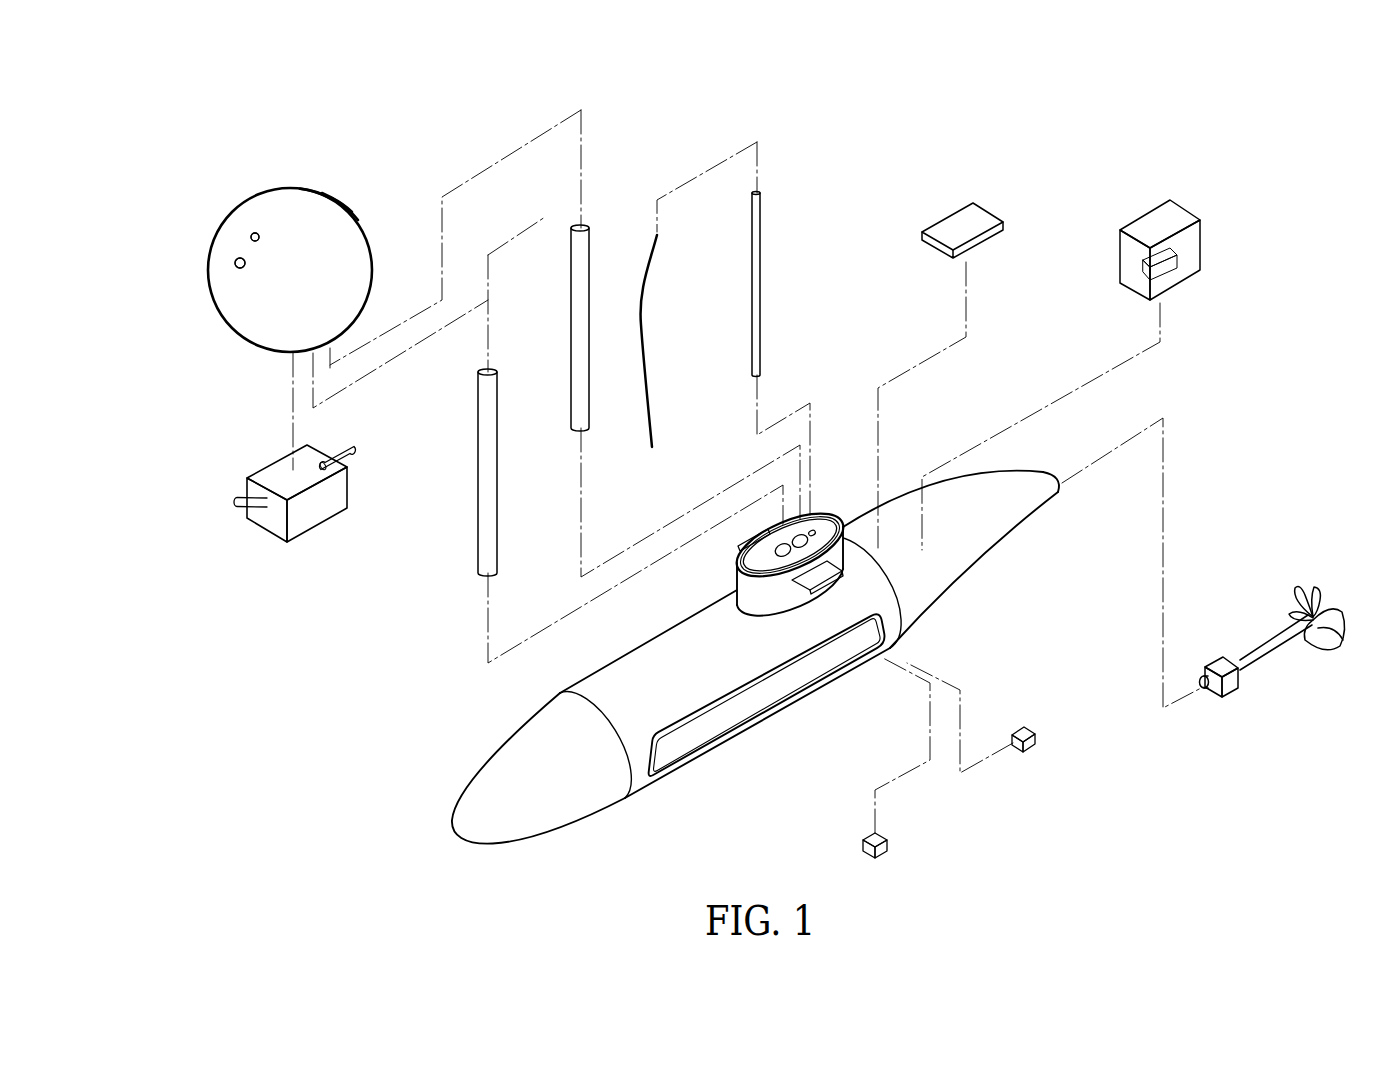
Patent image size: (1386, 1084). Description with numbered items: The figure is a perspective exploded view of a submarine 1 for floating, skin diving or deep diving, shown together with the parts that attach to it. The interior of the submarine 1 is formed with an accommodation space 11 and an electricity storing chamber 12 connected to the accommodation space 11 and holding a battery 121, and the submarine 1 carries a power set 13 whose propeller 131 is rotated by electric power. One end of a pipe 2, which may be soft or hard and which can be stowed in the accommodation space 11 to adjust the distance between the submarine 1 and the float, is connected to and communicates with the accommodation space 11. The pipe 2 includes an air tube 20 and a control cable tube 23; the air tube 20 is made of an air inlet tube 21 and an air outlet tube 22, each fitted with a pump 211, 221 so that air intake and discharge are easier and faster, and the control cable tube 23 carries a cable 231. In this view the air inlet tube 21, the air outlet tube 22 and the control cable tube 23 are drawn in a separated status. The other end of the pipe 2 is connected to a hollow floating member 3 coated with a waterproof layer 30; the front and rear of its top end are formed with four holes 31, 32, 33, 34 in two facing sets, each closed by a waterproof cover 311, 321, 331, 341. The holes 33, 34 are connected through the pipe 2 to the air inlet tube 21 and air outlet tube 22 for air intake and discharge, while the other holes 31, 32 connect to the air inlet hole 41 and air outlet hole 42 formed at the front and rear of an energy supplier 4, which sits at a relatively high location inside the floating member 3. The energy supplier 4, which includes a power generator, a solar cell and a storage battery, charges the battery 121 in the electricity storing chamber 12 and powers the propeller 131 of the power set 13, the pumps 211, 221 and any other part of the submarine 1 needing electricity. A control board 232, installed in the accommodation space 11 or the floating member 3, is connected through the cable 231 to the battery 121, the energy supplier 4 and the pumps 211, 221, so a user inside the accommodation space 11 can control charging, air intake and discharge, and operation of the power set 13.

The submarine 1 is at (639, 672).
The accommodation space 11 is at (974, 559).
The electricity storing chamber 12 is at (1102, 375).
The battery 121 is at (1108, 265).
The power set 13 is at (1203, 626).
The propeller 131 is at (1276, 605).
The pipe 2 is at (707, 364).
The air tube 20 is at (447, 259).
The air inlet tube 21 is at (507, 448).
The pump 211 is at (922, 758).
The air outlet tube 22 is at (548, 328).
The pump 221 is at (1017, 718).
The control cable tube 23 is at (792, 284).
The cable 231 is at (688, 341).
The control board 232 is at (971, 360).
The floating member 3 is at (211, 445).
The waterproof layer 30 is at (278, 298).
The hole 31 is at (229, 204).
The waterproof cover 311 is at (207, 219).
The hole 32 is at (323, 166).
The waterproof cover 321 is at (372, 177).
The hole 33 is at (202, 260).
The waterproof cover 331 is at (200, 297).
The hole 34 is at (373, 208).
The waterproof cover 341 is at (385, 234).
The energy supplier 4 is at (319, 497).
The air inlet hole 41 is at (231, 532).
The air outlet hole 42 is at (367, 437).